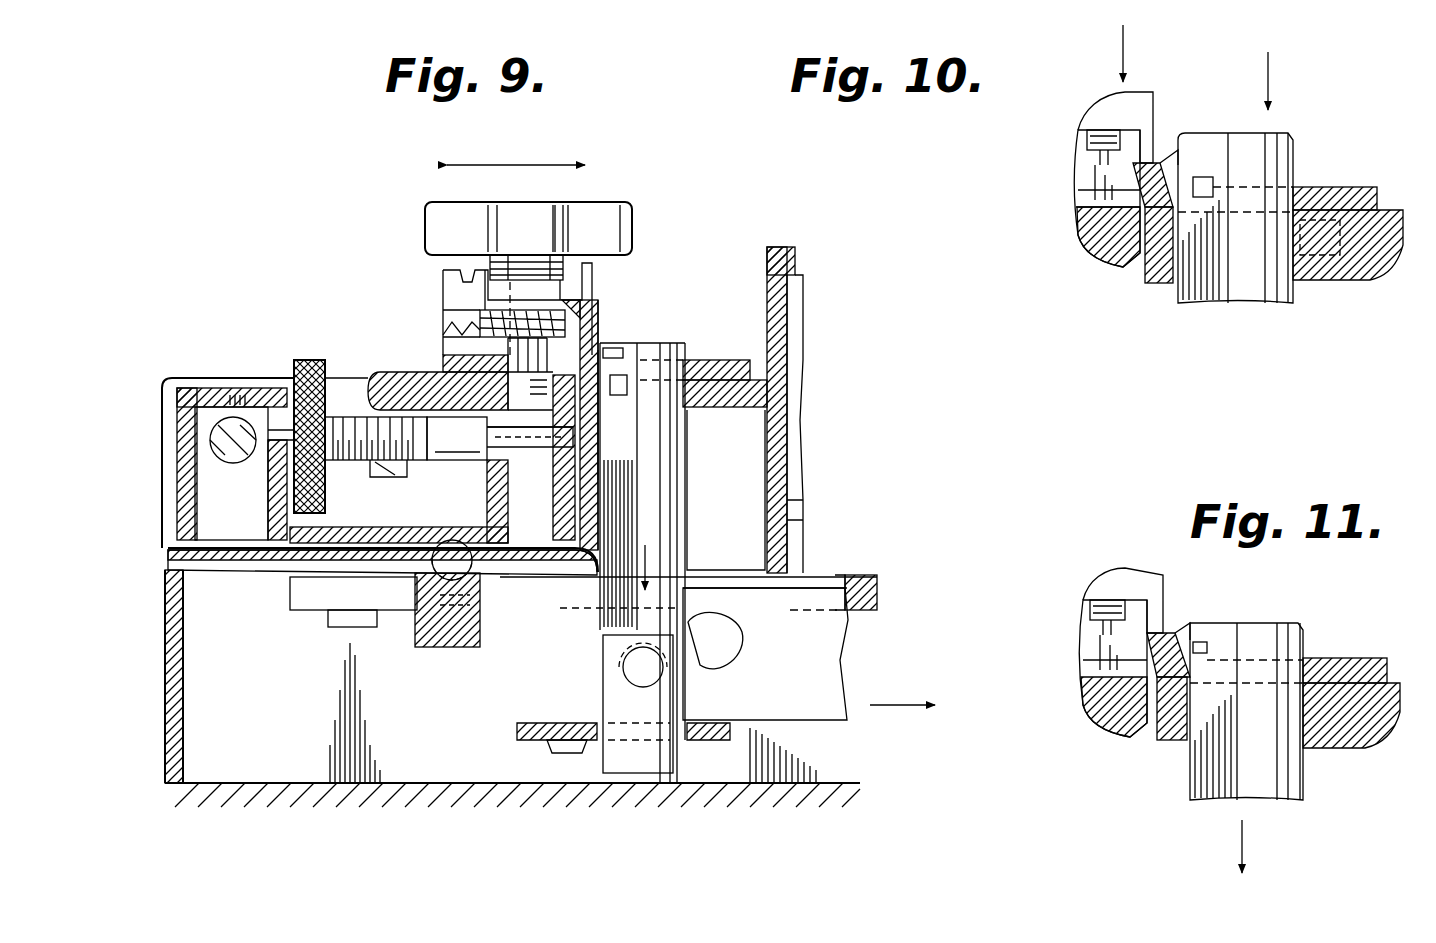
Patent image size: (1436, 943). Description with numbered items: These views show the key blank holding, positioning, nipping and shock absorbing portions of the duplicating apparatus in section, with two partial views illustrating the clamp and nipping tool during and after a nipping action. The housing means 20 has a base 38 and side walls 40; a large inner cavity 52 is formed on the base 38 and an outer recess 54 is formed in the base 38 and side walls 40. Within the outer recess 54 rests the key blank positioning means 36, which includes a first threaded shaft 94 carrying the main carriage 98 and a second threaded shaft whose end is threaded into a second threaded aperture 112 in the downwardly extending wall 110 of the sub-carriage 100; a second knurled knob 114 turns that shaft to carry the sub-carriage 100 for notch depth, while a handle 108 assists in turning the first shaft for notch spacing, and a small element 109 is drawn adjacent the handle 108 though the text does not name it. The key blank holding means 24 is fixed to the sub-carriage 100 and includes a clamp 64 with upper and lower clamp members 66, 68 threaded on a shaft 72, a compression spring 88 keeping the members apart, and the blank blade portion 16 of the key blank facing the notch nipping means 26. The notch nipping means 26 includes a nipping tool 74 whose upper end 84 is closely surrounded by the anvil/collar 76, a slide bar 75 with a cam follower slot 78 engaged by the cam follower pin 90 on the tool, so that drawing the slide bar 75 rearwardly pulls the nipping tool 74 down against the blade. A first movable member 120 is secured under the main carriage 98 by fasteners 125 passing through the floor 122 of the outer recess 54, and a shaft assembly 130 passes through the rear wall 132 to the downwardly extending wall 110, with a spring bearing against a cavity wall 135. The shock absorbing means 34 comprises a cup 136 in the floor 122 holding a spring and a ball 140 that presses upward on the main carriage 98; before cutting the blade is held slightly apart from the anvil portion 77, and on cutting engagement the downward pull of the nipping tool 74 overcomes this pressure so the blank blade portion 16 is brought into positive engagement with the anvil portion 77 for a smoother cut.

In FIG. 9, the blank blade portion 16 is at (593, 350).
In FIG. 10, the blank blade portion 16 is at (1163, 163).
In FIG. 11, the blank blade portion 16 is at (1173, 647).
In FIG. 9, the housing means 20 is at (155, 665).
In FIG. 9, the key blank holding means 24 is at (415, 190).
In FIG. 9, the notch nipping means 26 is at (757, 730).
In FIG. 9, the shock absorbing means 34 is at (467, 660).
In FIG. 9, the key blank positioning means 36 is at (278, 366).
In FIG. 9, the base 38 is at (323, 800).
In FIG. 9, the side walls 40 is at (165, 745).
In FIG. 9, the inner cavity 52 is at (321, 713).
In FIG. 9, the outer recess 54 is at (427, 515).
In FIG. 9, the clamp 64 is at (443, 340).
In FIG. 9, the upper clamp member 66 is at (443, 275).
In FIG. 10, the upper clamp member 66 is at (1118, 105).
In FIG. 11, the upper clamp member 66 is at (1148, 580).
In FIG. 9, the lower clamp member 68 is at (443, 363).
In FIG. 10, the lower clamp member 68 is at (1087, 172).
In FIG. 11, the lower clamp member 68 is at (1097, 637).
In FIG. 9, the shaft 72 is at (508, 303).
In FIG. 9, the nipping tool 74 is at (663, 753).
In FIG. 10, the nipping tool 74 is at (1257, 283).
In FIG. 11, the nipping tool 74 is at (1300, 780).
In FIG. 9, the slide bar 75 is at (837, 673).
In FIG. 9, the anvil/collar 76 is at (722, 365).
In FIG. 10, the anvil/collar 76 is at (1360, 190).
In FIG. 11, the anvil/collar 76 is at (1357, 667).
In FIG. 10, the anvil portion 77 is at (1147, 193).
In FIG. 11, the anvil portion 77 is at (1170, 670).
In FIG. 9, the cam follower slot 78 is at (742, 640).
In FIG. 9, the upper end 84 is at (663, 343).
In FIG. 10, the upper end 84 is at (1283, 138).
In FIG. 11, the upper end 84 is at (1273, 643).
In FIG. 9, the compression spring 88 is at (527, 313).
In FIG. 10, the compression spring 88 is at (1100, 130).
In FIG. 11, the compression spring 88 is at (1110, 600).
In FIG. 9, the cam follower pin 90 is at (653, 667).
In FIG. 9, the first threaded shaft 94 is at (222, 433).
In FIG. 9, the main carriage 98 is at (532, 522).
In FIG. 9, the sub-carriage 100 is at (468, 405).
In FIG. 9, the handle 108 is at (412, 462).
In FIG. 9, the stop 109 is at (385, 478).
In FIG. 9, the downwardly extending wall 110 is at (548, 482).
In FIG. 10, the downwardly extending wall 110 is at (1123, 253).
In FIG. 11, the downwardly extending wall 110 is at (1133, 740).
In FIG. 9, the second threaded aperture 112 is at (603, 437).
In FIG. 9, the second knurled knob 114 is at (307, 360).
In FIG. 9, the first movable member 120 is at (310, 600).
In FIG. 9, the floor 122 is at (230, 567).
In FIG. 9, the fasteners 125 is at (357, 622).
In FIG. 9, the shaft assembly 130 is at (800, 507).
In FIG. 9, the rear wall 132 is at (578, 467).
In FIG. 10, the rear wall 132 is at (1157, 263).
In FIG. 11, the rear wall 132 is at (1170, 743).
In FIG. 9, the cavity wall 135 is at (797, 357).
In FIG. 9, the cup 136 is at (443, 647).
In FIG. 9, the ball 140 is at (500, 613).